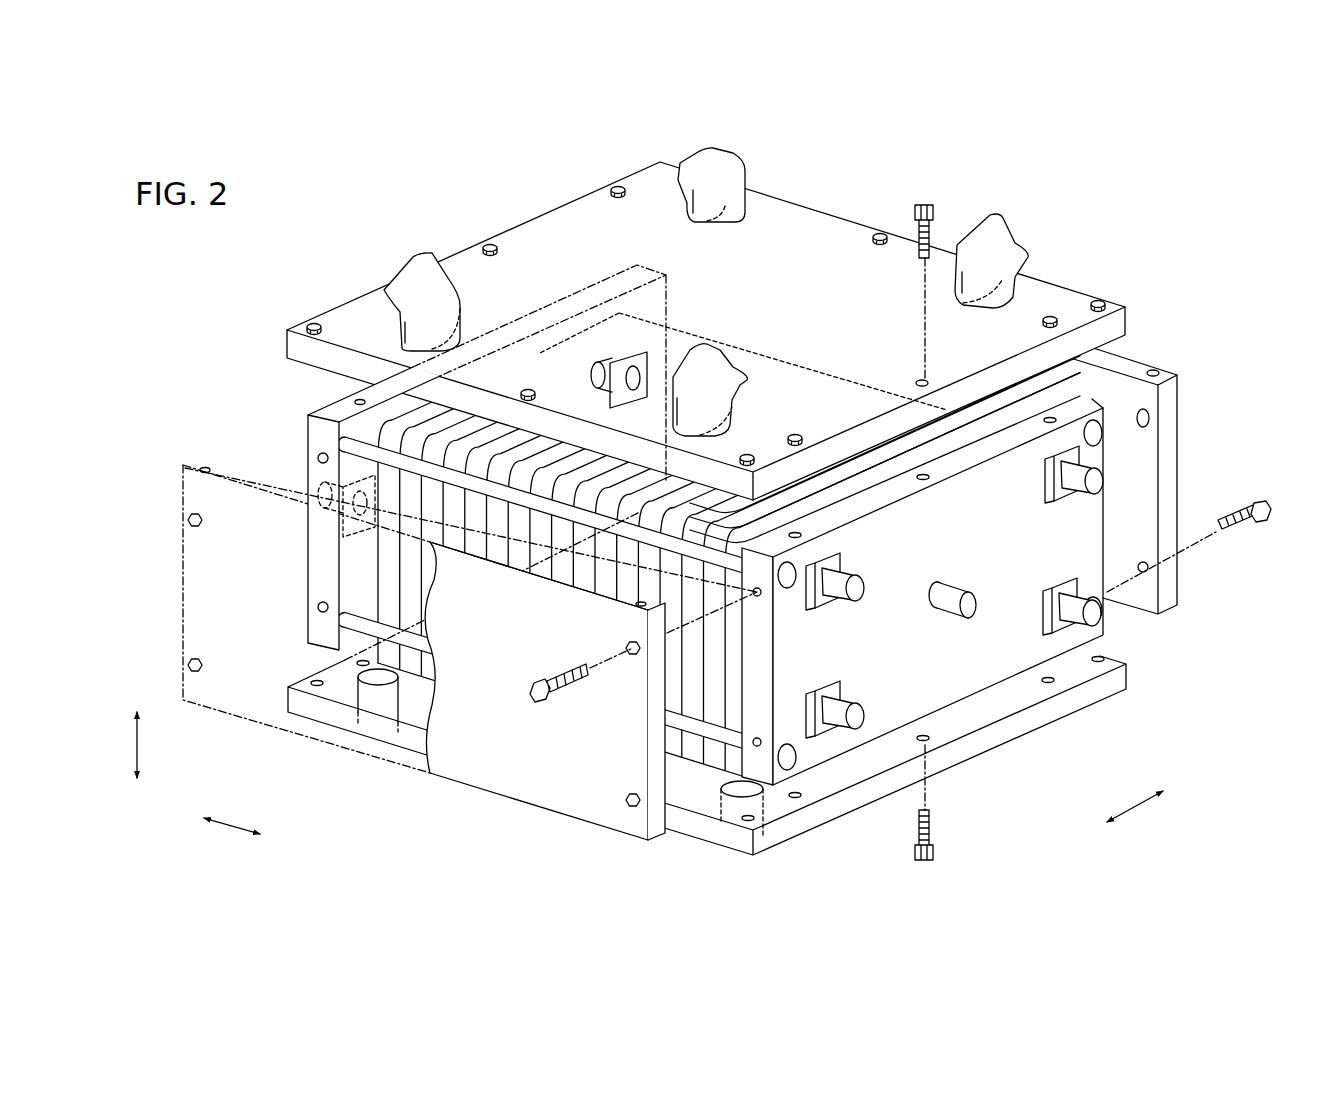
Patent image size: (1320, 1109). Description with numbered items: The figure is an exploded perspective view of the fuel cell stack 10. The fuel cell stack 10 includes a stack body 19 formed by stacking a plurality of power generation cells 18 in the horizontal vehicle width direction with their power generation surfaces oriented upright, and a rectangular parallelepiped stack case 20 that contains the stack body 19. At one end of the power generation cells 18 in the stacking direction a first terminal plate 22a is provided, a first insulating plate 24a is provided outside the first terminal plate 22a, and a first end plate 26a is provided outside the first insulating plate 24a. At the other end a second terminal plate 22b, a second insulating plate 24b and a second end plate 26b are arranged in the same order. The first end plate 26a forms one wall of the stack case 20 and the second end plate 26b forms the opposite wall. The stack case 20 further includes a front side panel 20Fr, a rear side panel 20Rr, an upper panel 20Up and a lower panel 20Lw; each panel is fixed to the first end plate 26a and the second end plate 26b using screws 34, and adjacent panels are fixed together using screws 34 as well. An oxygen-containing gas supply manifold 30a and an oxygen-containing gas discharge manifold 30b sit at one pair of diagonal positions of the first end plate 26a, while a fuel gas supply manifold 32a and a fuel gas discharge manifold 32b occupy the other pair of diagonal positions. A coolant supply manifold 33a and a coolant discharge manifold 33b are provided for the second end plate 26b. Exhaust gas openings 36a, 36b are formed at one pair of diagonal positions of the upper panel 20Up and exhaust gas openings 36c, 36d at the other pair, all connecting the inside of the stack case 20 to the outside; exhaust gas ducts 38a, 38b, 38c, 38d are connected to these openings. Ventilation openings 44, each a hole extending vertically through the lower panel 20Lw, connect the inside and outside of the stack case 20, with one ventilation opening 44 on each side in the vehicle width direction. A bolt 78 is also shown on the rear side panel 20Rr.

The fuel cell stack 10 is at (257, 247).
The power generation cell 18 is at (457, 530).
The stack body 19 is at (567, 660).
The stack case 20 is at (537, 210).
The upper panel 20Up is at (797, 222).
The lower panel 20Lw is at (976, 752).
The front side panel 20Fr is at (505, 776).
The rear side panel 20Rr is at (1168, 440).
The first terminal plate 22a is at (879, 462).
The second terminal plate 22b is at (410, 582).
The first insulating plate 24a is at (947, 448).
The second insulating plate 24b is at (388, 555).
The first end plate 26a is at (1000, 666).
The second end plate 26b is at (306, 409).
The oxygen-containing gas supply manifold 30a is at (1062, 483).
The oxygen-containing gas discharge manifold 30b is at (850, 710).
The fuel gas supply manifold 32a is at (827, 588).
The fuel gas discharge manifold 32b is at (1063, 627).
The coolant supply manifold 33a is at (322, 487).
The coolant discharge manifold 33b is at (594, 372).
The screw 34 is at (925, 203).
The exhaust gas opening 36a is at (452, 305).
The exhaust gas opening 36b is at (956, 291).
The exhaust gas opening 36c is at (740, 417).
The exhaust gas opening 36d is at (690, 196).
The exhaust gas duct 38a is at (412, 272).
The exhaust gas duct 38b is at (1006, 233).
The exhaust gas duct 38c is at (721, 357).
The exhaust gas duct 38d is at (727, 222).
The ventilation opening 44 is at (381, 690).
The bolt 78 is at (1245, 533).